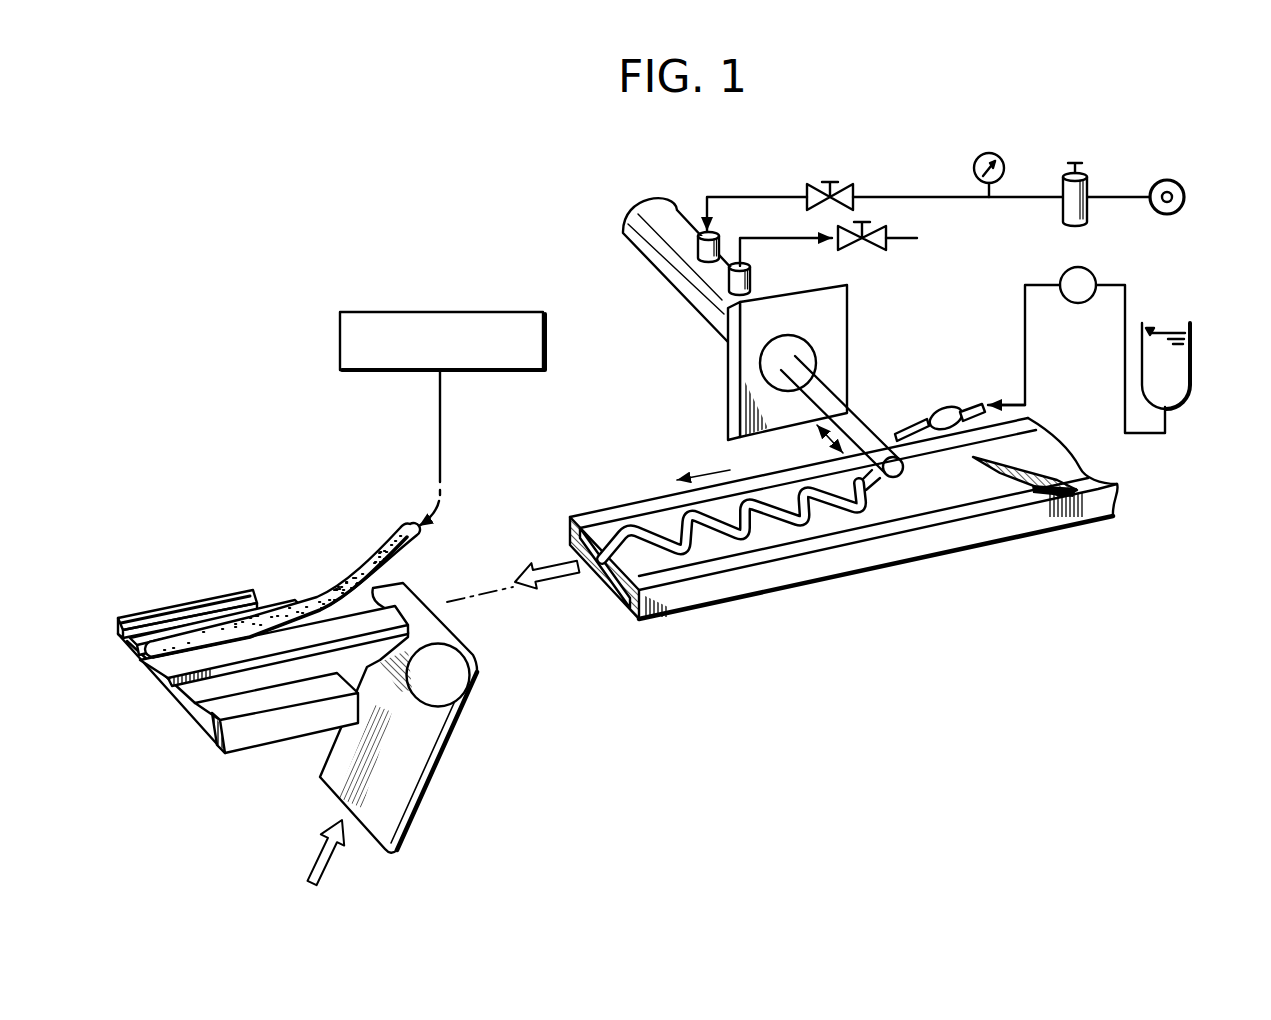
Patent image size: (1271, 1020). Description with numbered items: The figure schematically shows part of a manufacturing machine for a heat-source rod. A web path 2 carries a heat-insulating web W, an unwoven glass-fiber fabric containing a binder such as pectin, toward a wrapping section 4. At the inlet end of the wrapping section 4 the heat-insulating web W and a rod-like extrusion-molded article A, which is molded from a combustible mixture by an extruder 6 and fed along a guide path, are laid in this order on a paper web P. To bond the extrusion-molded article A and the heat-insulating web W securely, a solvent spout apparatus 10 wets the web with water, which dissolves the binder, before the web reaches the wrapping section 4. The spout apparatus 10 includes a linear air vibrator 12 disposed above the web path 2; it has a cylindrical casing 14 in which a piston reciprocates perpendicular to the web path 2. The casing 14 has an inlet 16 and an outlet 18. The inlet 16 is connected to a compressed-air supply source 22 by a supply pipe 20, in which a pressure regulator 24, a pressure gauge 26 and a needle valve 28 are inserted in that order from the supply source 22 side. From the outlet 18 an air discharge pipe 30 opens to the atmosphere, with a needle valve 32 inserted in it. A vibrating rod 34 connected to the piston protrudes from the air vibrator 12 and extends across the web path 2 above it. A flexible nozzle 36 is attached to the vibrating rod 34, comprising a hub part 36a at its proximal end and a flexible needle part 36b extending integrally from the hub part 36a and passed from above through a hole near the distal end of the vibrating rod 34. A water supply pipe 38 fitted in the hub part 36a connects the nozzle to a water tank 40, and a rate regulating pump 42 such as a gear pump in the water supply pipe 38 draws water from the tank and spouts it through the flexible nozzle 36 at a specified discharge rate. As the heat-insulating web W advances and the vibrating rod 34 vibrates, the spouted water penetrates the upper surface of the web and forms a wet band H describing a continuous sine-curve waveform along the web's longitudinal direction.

The web path 2 is at (844, 548).
The wrapping section 4 is at (213, 580).
The extruder 6 is at (372, 312).
The solvent spout apparatus 10 is at (1018, 140).
The linear air vibrator 12 is at (665, 248).
The cylindrical casing 14 is at (643, 255).
The inlet 16 is at (690, 257).
The outlet 18 is at (727, 292).
The supply pipe 20 is at (766, 194).
The compressed-air supply source 22 is at (1184, 196).
The pressure regulator 24 is at (1065, 206).
The pressure gauge 26 is at (975, 166).
The needle valve 28 is at (840, 186).
The air discharge pipe 30 is at (782, 240).
The needle valve 32 is at (905, 235).
The vibrating rod 34 is at (850, 418).
The flexible nozzle 36 is at (931, 461).
The hub part 36a is at (940, 410).
The needle part 36b is at (868, 490).
The water supply pipe 38 is at (972, 404).
The water tank 40 is at (1178, 350).
The rate regulating pump 42 is at (1096, 278).
The extrusion-molded article A is at (385, 550).
The heat-insulating web W is at (322, 633).
The wet band H is at (727, 533).
The paper web P is at (427, 750).